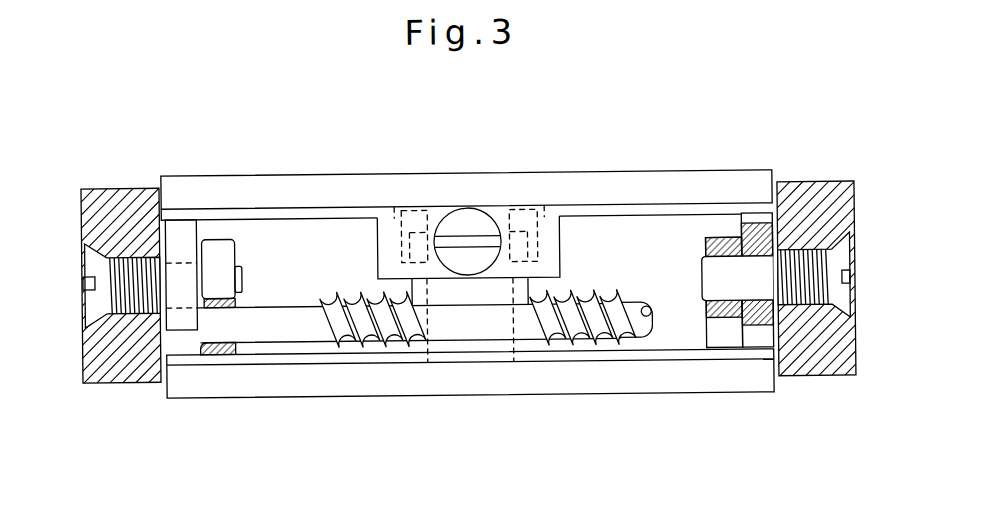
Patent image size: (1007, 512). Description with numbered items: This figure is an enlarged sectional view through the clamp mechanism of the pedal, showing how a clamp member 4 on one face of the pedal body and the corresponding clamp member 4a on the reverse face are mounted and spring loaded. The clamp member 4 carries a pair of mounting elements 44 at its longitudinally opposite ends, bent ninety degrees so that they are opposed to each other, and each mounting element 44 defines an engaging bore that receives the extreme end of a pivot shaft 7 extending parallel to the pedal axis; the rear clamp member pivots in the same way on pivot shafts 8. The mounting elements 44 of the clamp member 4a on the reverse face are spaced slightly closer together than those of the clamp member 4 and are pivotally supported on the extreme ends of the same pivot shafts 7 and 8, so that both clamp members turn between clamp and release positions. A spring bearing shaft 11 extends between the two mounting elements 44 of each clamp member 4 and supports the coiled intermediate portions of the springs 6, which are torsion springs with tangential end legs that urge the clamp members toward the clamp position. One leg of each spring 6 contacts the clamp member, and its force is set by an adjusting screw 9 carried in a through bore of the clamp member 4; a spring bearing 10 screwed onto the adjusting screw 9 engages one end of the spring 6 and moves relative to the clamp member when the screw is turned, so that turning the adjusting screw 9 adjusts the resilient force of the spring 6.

The clamp member 4 is at (627, 165).
The clamp member 4a is at (645, 407).
The spring 6 is at (352, 346).
The pivot shaft 7 is at (467, 281).
The pivot shaft 8 is at (884, 281).
The adjusting screw 9 is at (475, 211).
The spring bearing 10 is at (427, 208).
The spring bearing shaft 11 is at (457, 333).
The mounting element 44 is at (232, 242).